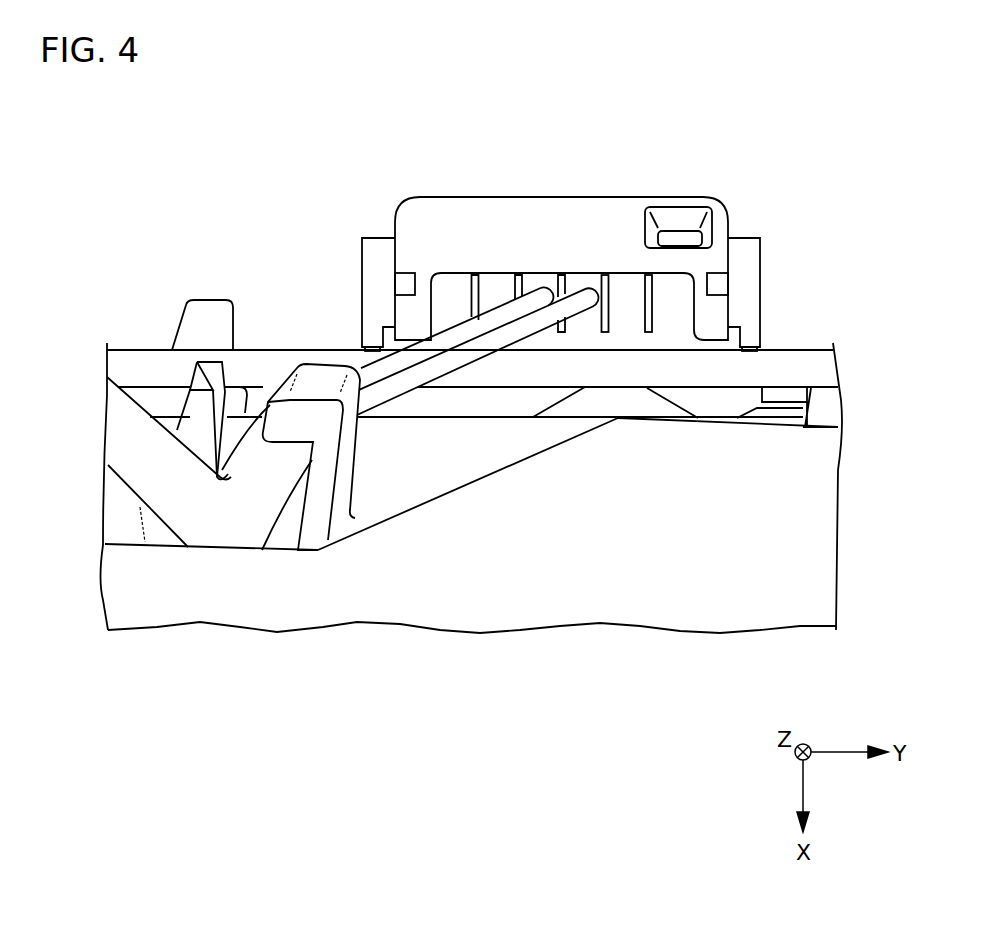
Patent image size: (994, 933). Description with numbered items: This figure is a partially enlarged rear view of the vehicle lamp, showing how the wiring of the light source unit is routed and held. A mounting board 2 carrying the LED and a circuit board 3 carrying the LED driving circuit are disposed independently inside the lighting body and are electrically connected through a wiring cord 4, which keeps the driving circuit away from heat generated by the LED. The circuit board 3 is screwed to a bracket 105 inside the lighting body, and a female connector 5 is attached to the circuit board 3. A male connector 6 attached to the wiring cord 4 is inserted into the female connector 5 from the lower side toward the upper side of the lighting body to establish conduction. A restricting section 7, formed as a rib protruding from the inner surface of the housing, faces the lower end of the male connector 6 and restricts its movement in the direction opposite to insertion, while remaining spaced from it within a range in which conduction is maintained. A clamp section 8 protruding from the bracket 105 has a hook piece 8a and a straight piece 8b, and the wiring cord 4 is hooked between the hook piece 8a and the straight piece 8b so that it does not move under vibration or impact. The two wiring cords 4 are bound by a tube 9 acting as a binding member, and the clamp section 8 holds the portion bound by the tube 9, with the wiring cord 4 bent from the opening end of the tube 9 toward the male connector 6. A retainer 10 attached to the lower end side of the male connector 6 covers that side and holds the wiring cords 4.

The mounting board 2 is at (652, 576).
The circuit board 3 is at (813, 369).
The wiring cord 4 is at (455, 360).
The female connector 5 is at (745, 293).
The male connector 6 is at (668, 302).
The restricting section 7 is at (677, 217).
The clamp section 8 is at (303, 210).
The hook piece 8a is at (318, 377).
The straight piece 8b is at (207, 375).
The tube 9 is at (153, 470).
The retainer 10 is at (553, 190).
The bracket 105 is at (402, 462).